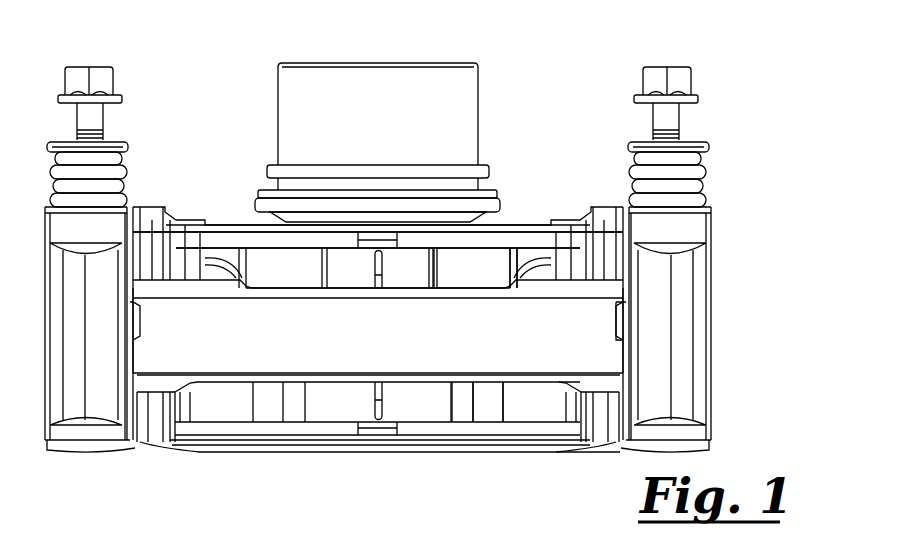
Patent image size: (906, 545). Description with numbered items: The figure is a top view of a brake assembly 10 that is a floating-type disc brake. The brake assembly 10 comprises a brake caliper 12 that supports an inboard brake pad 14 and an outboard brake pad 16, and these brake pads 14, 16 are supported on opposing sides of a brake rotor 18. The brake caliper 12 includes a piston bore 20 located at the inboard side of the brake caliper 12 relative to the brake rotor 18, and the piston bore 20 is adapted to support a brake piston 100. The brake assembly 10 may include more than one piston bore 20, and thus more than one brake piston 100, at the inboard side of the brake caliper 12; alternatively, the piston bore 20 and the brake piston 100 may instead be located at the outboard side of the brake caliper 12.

The brake assembly 10 is at (202, 28).
The brake caliper 12 is at (680, 318).
The inboard brake pad 14 is at (487, 270).
The outboard brake pad 16 is at (335, 403).
The brake rotor 18 is at (470, 348).
The piston bore 20 is at (297, 140).
The brake piston 100 is at (438, 115).